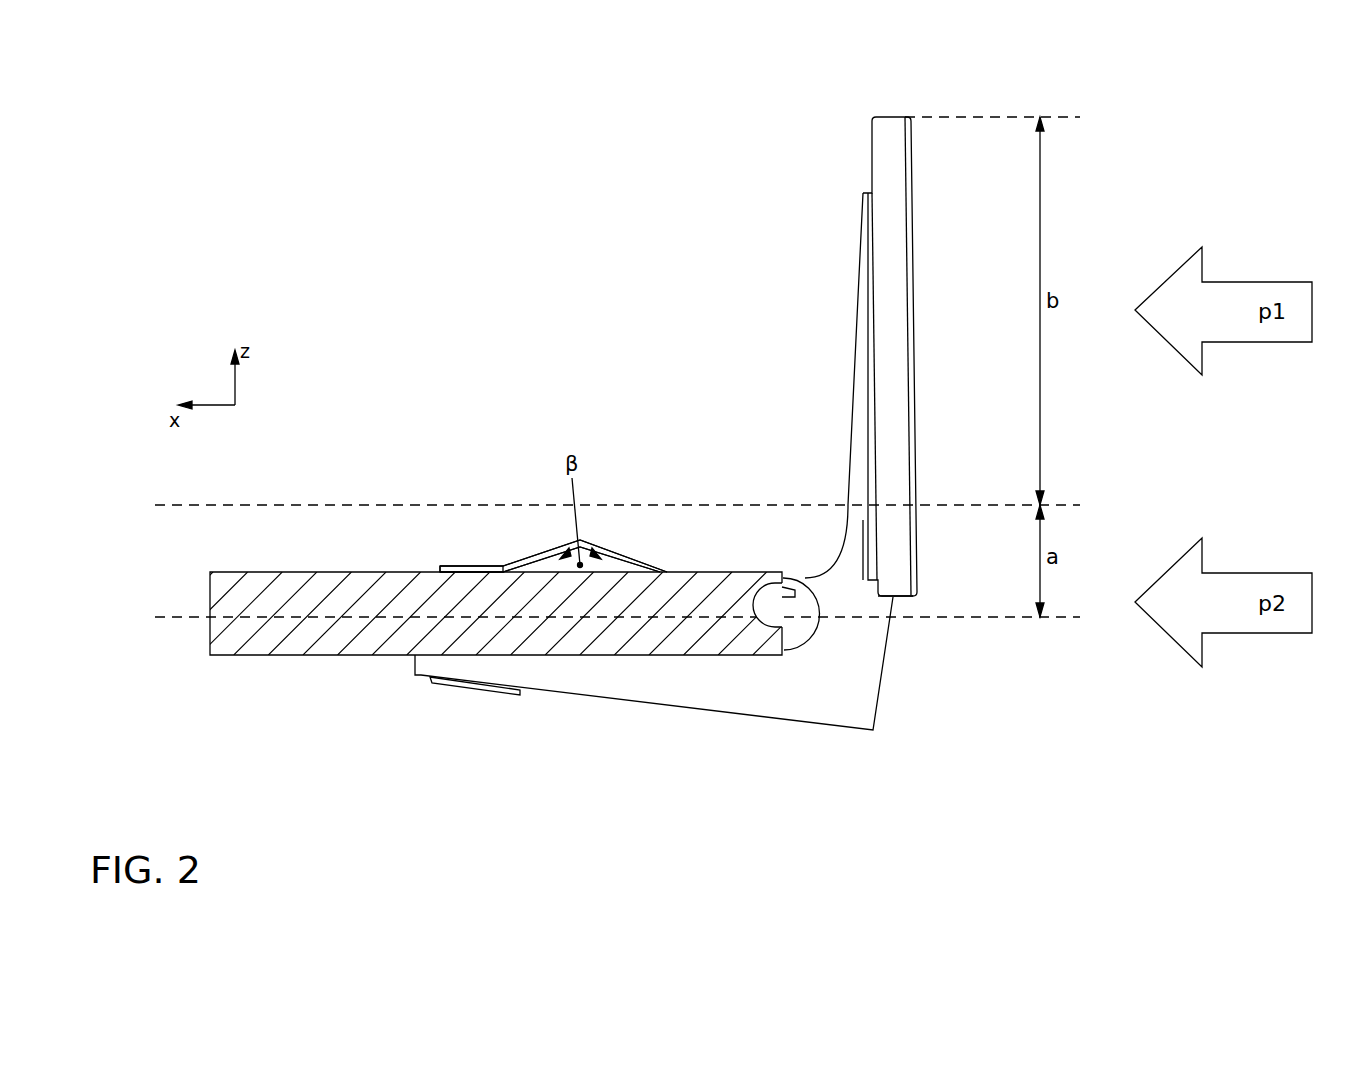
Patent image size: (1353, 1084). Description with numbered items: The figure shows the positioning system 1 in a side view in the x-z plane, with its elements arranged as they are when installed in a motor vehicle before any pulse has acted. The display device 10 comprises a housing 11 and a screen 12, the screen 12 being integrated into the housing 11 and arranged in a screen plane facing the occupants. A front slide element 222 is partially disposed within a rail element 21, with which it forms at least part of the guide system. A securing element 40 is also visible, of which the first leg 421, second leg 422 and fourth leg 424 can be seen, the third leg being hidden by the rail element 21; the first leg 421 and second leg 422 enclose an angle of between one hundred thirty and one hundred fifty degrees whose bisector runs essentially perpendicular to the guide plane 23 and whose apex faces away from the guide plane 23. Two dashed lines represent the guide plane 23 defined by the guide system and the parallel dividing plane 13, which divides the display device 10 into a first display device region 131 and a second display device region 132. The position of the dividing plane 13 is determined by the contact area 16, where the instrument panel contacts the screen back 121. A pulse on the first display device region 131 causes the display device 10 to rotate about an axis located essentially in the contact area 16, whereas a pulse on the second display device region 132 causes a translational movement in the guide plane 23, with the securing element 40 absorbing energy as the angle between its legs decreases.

The positioning system 1 is at (368, 250).
The display device 10 is at (766, 752).
The housing 11 is at (845, 683).
The screen 12 is at (908, 197).
The dividing plane 13 is at (192, 505).
The contact area 16 is at (848, 505).
The rail element 21 is at (375, 642).
The guide plane 23 is at (192, 617).
The securing element 40 is at (497, 538).
The screen back 121 is at (853, 400).
The first display device region 131 is at (915, 317).
The second display device region 132 is at (920, 577).
The front slide element 222 is at (793, 607).
The first leg 421 is at (553, 553).
The second leg 422 is at (622, 558).
The fourth leg 424 is at (453, 567).